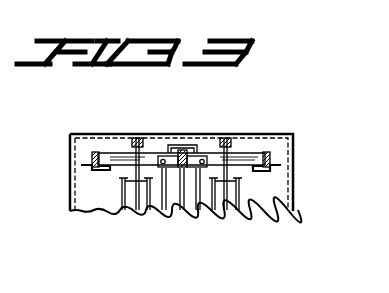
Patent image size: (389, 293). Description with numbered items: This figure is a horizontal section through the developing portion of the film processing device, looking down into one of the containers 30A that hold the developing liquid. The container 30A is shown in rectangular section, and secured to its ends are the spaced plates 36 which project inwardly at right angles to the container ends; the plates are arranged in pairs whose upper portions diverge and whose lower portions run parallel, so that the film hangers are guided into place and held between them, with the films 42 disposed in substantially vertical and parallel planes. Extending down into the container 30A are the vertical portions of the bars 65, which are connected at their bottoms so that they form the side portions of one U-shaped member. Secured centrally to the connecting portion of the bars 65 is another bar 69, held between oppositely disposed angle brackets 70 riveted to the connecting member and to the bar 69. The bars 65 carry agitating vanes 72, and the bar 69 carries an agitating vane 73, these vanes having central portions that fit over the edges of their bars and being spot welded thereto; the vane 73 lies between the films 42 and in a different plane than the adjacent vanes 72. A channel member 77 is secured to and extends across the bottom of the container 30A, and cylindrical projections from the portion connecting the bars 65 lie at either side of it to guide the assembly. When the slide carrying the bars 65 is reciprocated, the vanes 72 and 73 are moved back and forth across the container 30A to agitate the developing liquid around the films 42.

The container 30A is at (294, 146).
The vertically extending bar 65 is at (96, 152).
The agitating vane 72 is at (104, 170).
The plate 36 is at (130, 137).
The agitating vane 73 is at (196, 150).
The bar 69 is at (186, 206).
The angle bracket 70 is at (163, 206).
The channel member 77 is at (180, 206).
The film 42 is at (122, 200).